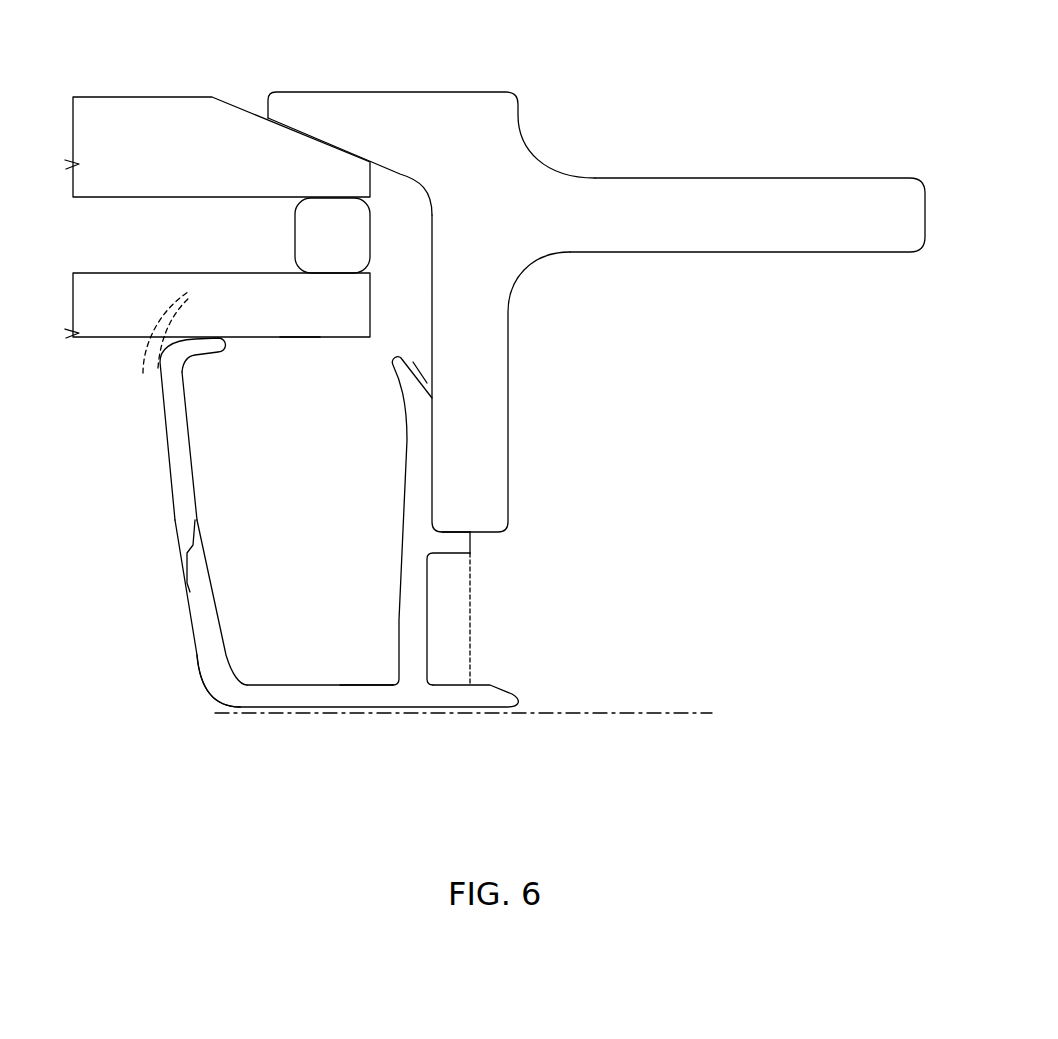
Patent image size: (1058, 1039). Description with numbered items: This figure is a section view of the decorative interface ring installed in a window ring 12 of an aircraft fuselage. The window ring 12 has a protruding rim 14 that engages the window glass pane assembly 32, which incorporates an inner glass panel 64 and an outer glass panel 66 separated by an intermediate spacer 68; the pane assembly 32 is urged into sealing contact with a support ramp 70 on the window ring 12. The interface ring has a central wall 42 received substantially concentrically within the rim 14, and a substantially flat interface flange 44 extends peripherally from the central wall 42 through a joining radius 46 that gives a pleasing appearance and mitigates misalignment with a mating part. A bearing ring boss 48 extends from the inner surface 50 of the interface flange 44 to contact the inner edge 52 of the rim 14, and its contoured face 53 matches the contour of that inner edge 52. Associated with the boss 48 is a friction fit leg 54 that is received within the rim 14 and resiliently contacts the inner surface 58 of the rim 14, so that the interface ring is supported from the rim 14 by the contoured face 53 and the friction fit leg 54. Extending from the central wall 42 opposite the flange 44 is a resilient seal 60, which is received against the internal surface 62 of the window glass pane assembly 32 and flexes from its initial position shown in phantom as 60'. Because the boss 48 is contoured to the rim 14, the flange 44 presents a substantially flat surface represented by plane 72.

The window ring 12 is at (670, 218).
The protruding rim 14 is at (495, 362).
The window glass pane assembly 32 is at (331, 531).
The central wall 42 is at (200, 618).
The interface flange 44 is at (487, 703).
The joining radius 46 is at (228, 692).
The bearing ring boss 48 is at (471, 588).
The inner surface 50 is at (362, 685).
The inner edge 52 is at (483, 535).
The contoured face 53 is at (448, 530).
The friction fit leg 54 is at (410, 479).
The inner surface of the rim 58 is at (430, 317).
The resilient seal 60 is at (148, 429).
The initial position of resilient seal 60' is at (142, 363).
The internal surface 62 is at (301, 340).
The inner glass panel 64 is at (140, 285).
The outer glass panel 66 is at (197, 127).
The intermediate spacer 68 is at (302, 250).
The support ramp 70 is at (308, 138).
The plane 72 is at (657, 717).